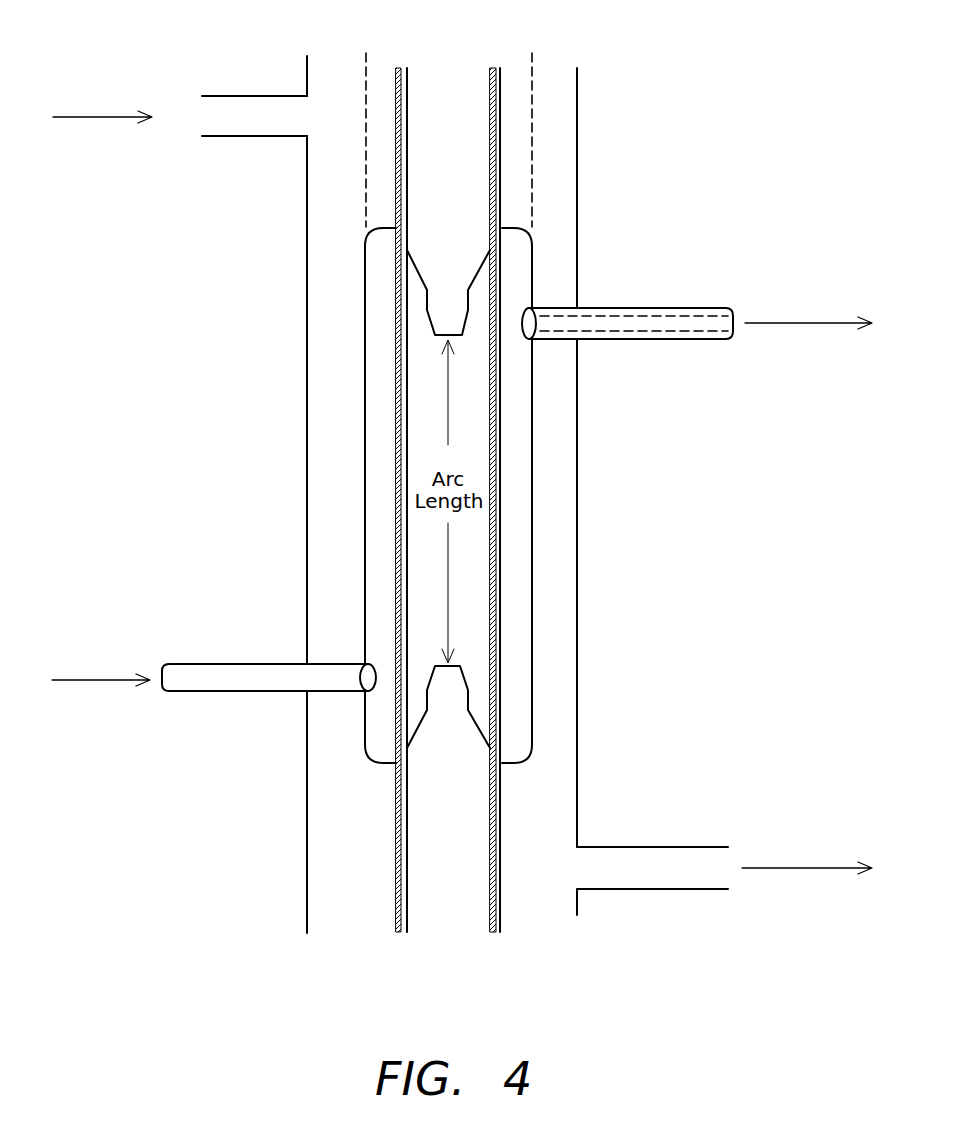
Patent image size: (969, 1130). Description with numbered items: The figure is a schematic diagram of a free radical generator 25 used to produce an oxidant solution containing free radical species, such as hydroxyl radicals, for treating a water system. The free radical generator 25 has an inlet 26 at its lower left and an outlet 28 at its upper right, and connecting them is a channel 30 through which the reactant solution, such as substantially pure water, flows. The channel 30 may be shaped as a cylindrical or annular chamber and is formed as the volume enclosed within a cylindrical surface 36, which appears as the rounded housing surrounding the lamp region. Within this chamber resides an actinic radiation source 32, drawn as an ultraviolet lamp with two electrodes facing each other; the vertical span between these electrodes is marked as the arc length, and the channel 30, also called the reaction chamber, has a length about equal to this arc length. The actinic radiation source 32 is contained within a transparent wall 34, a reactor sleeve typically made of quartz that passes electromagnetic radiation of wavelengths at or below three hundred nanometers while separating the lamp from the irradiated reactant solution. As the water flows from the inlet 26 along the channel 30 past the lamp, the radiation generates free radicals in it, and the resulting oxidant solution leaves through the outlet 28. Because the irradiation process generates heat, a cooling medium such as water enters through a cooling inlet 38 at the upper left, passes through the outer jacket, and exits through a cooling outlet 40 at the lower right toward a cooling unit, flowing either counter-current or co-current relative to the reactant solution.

The free radical generator 25 is at (617, 57).
The inlet 26 is at (243, 692).
The outlet 28 is at (675, 308).
The channel 30 is at (507, 612).
The actinic radiation source 32 is at (424, 410).
The transparent wall 34 is at (502, 792).
The cylindrical surface 36 is at (365, 550).
The cooling inlet 38 is at (248, 137).
The cooling outlet 40 is at (705, 890).